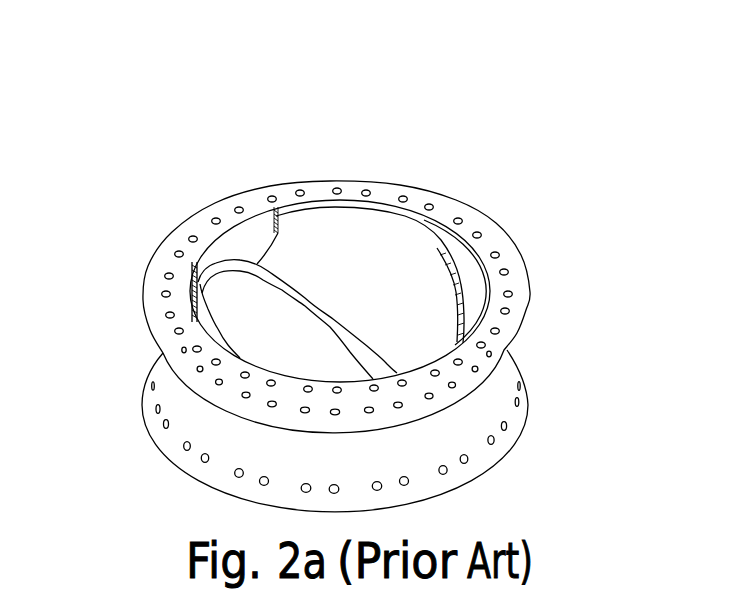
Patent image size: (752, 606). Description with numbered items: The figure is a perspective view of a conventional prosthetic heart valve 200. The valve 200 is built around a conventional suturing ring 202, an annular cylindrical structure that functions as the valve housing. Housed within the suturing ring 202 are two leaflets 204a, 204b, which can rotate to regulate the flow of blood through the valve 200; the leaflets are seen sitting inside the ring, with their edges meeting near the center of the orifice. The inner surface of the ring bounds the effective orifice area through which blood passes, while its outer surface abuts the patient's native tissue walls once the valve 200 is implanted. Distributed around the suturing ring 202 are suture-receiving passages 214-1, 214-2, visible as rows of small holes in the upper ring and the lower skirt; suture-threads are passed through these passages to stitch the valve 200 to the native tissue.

The prosthetic heart valve 200 is at (405, 78).
The suturing ring 202 is at (493, 238).
The leaflet 204a is at (247, 278).
The leaflet 204b is at (343, 263).
The suture-receiving passage 214-1 is at (453, 218).
The suture-receiving passage 214-2 is at (515, 397).